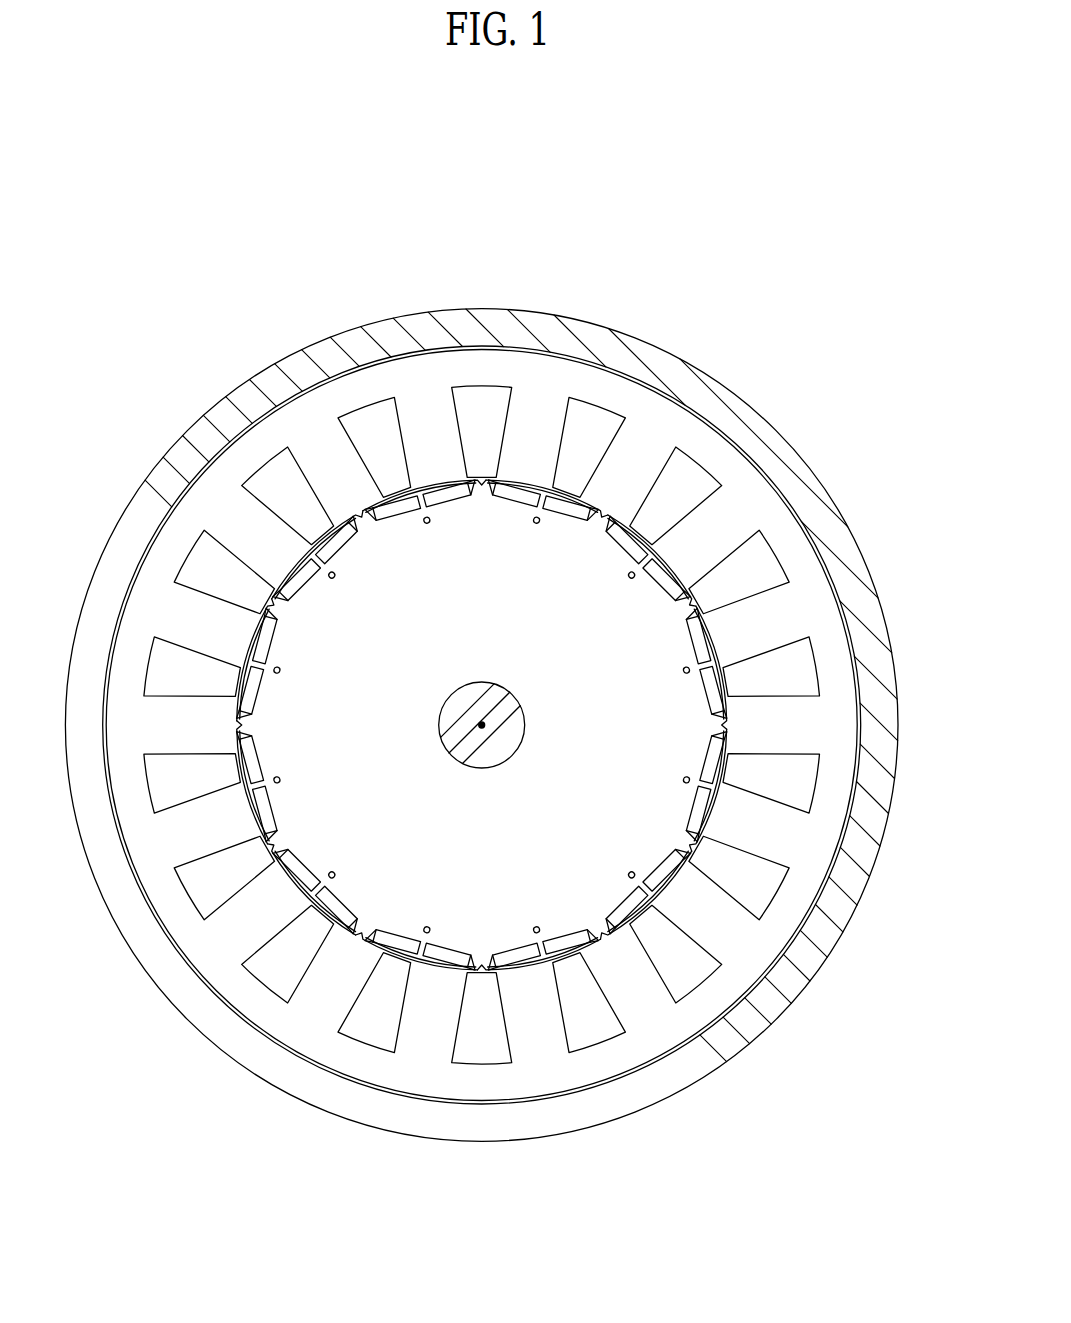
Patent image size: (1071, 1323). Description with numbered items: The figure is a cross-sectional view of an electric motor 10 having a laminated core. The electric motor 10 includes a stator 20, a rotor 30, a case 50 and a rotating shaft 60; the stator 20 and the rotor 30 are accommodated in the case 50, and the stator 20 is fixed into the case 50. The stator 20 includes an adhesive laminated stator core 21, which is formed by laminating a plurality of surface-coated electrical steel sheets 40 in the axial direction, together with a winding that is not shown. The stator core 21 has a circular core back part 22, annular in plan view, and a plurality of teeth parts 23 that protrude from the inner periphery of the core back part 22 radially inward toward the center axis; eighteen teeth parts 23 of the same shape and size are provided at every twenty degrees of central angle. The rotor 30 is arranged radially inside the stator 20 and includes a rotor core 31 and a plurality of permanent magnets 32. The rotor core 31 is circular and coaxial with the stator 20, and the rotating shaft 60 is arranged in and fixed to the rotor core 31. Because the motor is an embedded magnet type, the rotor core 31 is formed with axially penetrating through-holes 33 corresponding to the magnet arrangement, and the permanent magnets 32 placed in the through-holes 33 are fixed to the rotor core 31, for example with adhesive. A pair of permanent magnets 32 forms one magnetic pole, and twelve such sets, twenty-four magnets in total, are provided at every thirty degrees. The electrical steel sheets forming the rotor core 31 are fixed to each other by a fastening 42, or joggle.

The electric motor 10 is at (790, 210).
The stator 20 is at (779, 466).
The stator core 21 is at (707, 272).
The core back part 22 is at (673, 413).
The teeth parts 23 is at (563, 414).
The rotor 30 is at (427, 730).
The rotor core 31 is at (384, 912).
The permanent magnets 32 is at (560, 518).
The through-holes 33 is at (511, 950).
The electrical steel sheets 40 is at (265, 441).
The fastening 42 is at (337, 580).
The case 50 is at (822, 510).
The rotating shaft 60 is at (518, 748).